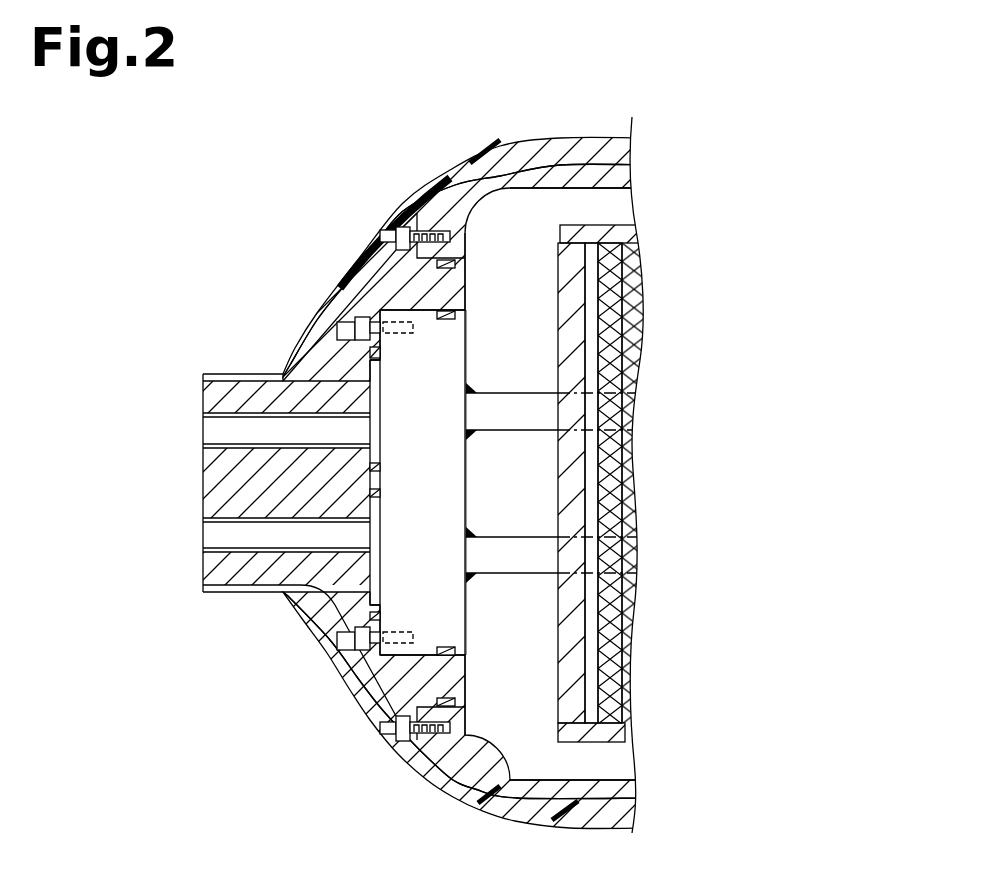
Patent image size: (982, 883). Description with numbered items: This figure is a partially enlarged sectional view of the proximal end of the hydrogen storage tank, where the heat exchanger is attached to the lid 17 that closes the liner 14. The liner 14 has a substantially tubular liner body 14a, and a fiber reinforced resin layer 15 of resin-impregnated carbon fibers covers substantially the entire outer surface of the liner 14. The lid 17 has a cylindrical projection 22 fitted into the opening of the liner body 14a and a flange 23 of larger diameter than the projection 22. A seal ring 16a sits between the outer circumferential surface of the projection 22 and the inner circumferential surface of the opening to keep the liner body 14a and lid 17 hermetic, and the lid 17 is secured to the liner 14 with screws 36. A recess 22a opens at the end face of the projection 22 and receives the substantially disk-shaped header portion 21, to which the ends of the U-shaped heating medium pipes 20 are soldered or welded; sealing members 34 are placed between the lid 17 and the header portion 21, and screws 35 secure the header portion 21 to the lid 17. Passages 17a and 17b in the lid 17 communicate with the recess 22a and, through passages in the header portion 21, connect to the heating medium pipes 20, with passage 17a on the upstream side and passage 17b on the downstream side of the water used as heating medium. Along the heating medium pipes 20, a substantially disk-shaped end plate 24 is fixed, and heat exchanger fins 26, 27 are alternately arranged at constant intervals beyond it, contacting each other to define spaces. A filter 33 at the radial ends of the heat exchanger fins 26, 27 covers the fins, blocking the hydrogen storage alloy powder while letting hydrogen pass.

The liner 14 is at (589, 162).
The liner body 14a is at (497, 181).
The fiber reinforced resin layer 15 is at (545, 150).
The seal ring 16a is at (448, 263).
The lid 17 is at (378, 292).
The passage 17a is at (215, 430).
The passage 17b is at (215, 540).
The heating medium pipes 20 is at (512, 420).
The header portion 21 is at (455, 500).
The projection 22 is at (462, 298).
The recess 22a is at (447, 650).
The flange 23 is at (410, 205).
The end plate 24 is at (566, 365).
The heat exchanger fin 26 is at (612, 693).
The heat exchanger fin 27 is at (592, 665).
The filter 33 is at (603, 232).
The sealing members 34 is at (448, 316).
The screws 35 is at (355, 328).
The screws 36 is at (396, 238).